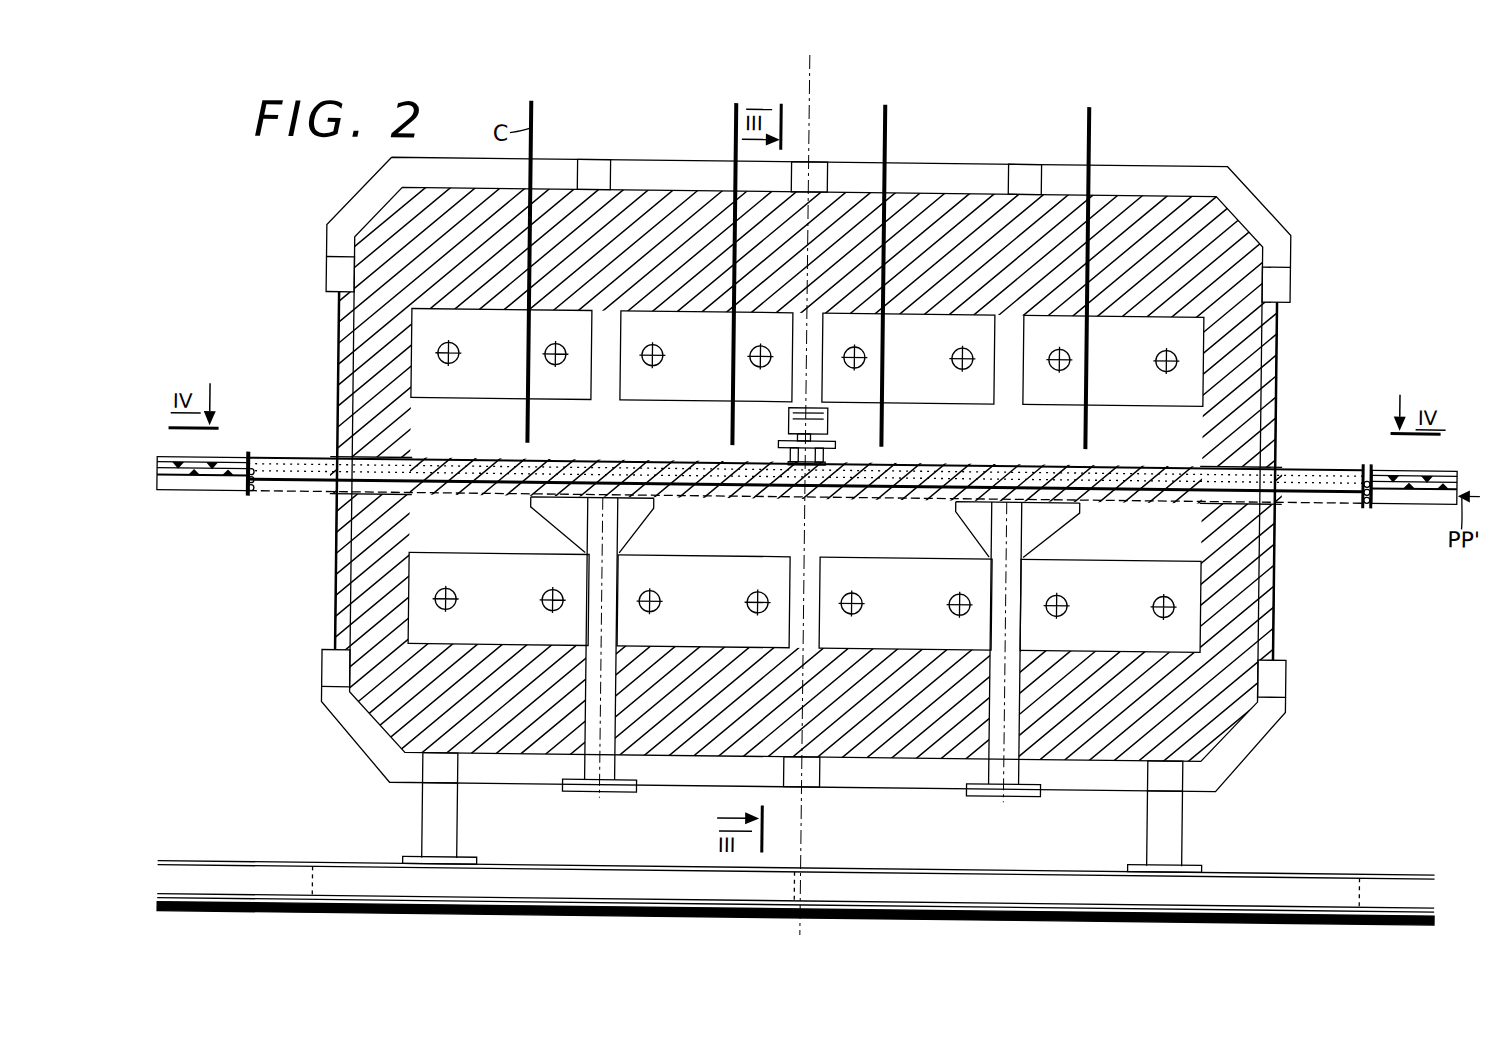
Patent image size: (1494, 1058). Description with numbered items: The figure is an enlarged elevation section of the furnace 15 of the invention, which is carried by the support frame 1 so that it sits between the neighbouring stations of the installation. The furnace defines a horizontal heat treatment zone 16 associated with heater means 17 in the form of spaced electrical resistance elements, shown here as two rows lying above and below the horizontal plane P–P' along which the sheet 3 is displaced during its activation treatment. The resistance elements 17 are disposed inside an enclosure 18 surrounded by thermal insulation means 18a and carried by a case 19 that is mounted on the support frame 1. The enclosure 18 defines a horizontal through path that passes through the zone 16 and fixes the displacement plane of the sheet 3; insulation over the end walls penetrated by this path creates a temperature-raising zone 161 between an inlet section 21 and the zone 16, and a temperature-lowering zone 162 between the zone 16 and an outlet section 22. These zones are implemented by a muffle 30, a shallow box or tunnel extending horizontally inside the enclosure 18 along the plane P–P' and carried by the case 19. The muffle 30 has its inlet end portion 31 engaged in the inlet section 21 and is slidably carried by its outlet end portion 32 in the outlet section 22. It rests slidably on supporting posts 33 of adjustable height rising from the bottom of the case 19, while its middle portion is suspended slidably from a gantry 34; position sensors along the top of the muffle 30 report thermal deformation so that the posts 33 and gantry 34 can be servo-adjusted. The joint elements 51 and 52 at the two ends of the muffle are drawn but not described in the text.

The support frame 1 is at (1037, 882).
The sheet 3 is at (1426, 472).
The furnace 15 is at (899, 165).
The horizontal heat treatment zone 16 is at (992, 444).
The heater means 17 is at (662, 357).
The enclosure 18 is at (963, 190).
The thermal insulation means 18a is at (1136, 192).
The case 19 is at (813, 170).
The inlet section 21 is at (333, 462).
The outlet section 22 is at (1289, 461).
The muffle 30 is at (681, 461).
The inlet end portion 31 is at (322, 498).
The outlet end portion 32 is at (1275, 505).
The supporting posts 33 is at (636, 517).
The gantry 34 is at (828, 428).
The left joint connector 51 is at (205, 502).
The right joint connector 52 is at (1412, 498).
The temperature-raising zone 161 is at (365, 505).
The temperature-lowering zone 162 is at (1235, 457).